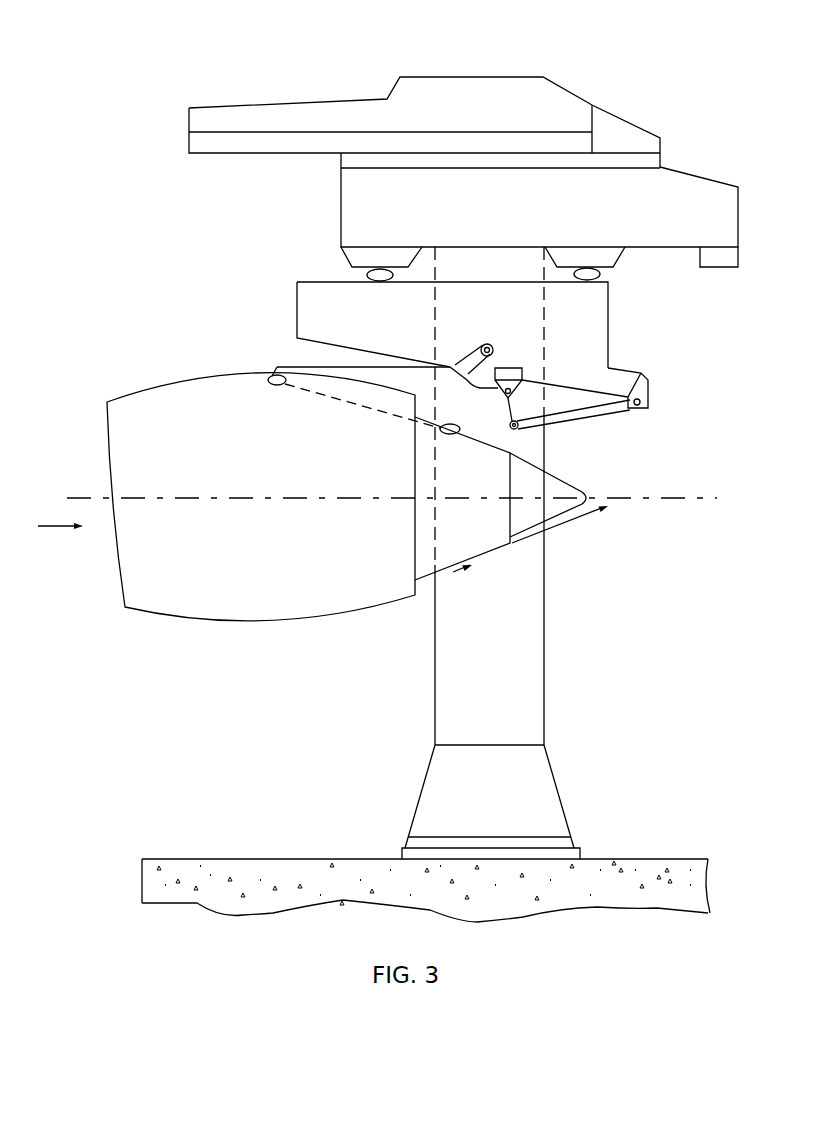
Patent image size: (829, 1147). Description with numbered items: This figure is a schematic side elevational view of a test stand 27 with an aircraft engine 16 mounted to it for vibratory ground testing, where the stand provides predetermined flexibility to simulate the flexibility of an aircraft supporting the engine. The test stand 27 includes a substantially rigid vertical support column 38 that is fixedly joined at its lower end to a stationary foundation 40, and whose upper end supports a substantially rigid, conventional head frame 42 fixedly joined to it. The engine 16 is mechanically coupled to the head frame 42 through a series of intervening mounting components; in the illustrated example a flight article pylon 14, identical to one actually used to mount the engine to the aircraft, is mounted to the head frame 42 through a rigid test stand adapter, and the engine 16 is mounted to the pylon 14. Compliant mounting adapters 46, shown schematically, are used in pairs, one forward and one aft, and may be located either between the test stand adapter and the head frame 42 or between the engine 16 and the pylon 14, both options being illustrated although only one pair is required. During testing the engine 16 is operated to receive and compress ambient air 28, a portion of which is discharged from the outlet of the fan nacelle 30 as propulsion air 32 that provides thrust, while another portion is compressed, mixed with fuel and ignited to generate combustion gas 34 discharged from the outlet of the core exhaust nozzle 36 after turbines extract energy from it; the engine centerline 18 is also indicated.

The flight article pylon 14 is at (305, 300).
The engine 16 is at (205, 648).
The engine centerline axis 18 is at (663, 499).
The test stand 27 is at (495, 50).
The ambient air 28 is at (53, 528).
The fan nacelle 30 is at (293, 617).
The propulsion air 32 is at (423, 578).
The combustion gas 34 is at (552, 527).
The core exhaust nozzle 36 is at (502, 545).
The vertical support column 38 is at (535, 708).
The stationary foundation 40 is at (640, 863).
The head frame 42 is at (721, 184).
The compliant mounting adapters 46 is at (367, 275).